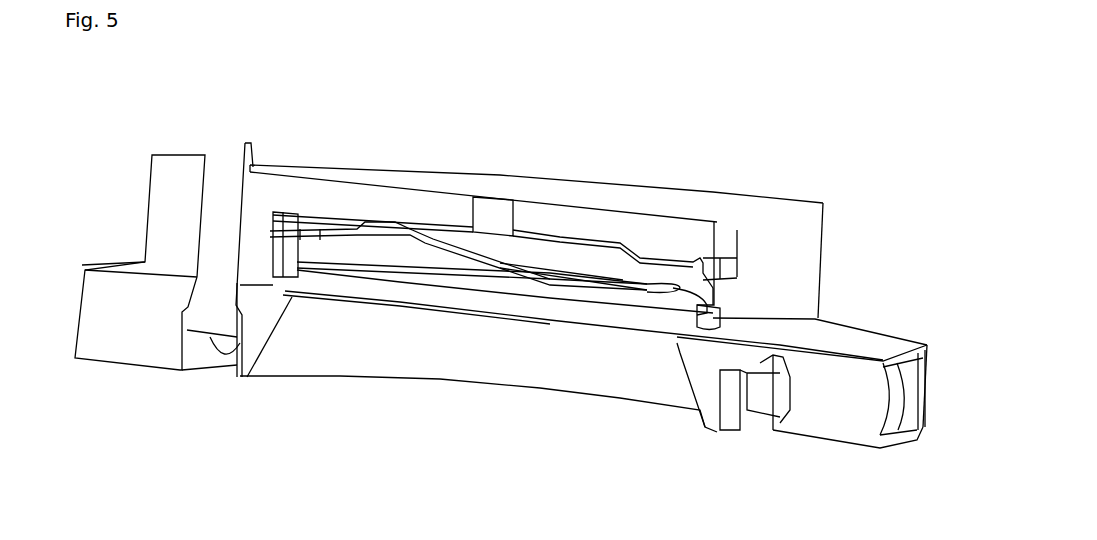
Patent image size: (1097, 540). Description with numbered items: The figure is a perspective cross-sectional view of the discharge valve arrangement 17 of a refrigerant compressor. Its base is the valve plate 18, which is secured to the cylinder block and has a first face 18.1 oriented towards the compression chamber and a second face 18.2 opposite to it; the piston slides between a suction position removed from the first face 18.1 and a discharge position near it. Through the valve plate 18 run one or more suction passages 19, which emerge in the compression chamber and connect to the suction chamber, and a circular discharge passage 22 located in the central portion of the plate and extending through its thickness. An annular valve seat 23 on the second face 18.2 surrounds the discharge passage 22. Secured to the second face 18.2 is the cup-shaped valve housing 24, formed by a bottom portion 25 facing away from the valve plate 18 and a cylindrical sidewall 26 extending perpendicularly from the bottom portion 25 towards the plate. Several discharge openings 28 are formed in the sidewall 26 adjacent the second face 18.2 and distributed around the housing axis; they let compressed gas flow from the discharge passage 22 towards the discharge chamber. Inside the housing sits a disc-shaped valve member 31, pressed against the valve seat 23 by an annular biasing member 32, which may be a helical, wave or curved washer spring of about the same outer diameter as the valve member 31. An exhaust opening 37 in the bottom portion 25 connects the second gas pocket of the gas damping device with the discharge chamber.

The discharge valve arrangement 17 is at (703, 162).
The valve plate 18 is at (837, 330).
The first face 18.1 is at (840, 446).
The second face 18.2 is at (128, 268).
The suction passage 19 is at (847, 380).
The discharge passage 22 is at (317, 357).
The valve seat 23 is at (281, 284).
The valve housing 24 is at (592, 217).
The bottom portion 25 is at (355, 195).
The sidewall 26 is at (725, 273).
The discharge opening 28 is at (719, 290).
The valve member 31 is at (588, 313).
The biasing member 32 is at (673, 307).
The exhaust opening 37 is at (493, 213).